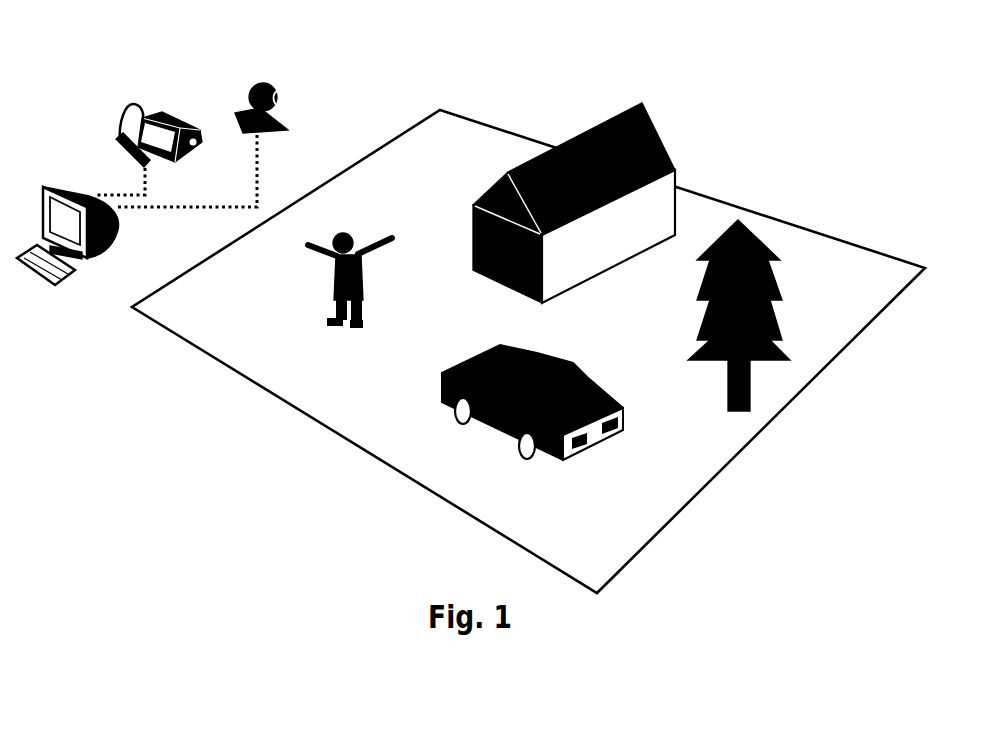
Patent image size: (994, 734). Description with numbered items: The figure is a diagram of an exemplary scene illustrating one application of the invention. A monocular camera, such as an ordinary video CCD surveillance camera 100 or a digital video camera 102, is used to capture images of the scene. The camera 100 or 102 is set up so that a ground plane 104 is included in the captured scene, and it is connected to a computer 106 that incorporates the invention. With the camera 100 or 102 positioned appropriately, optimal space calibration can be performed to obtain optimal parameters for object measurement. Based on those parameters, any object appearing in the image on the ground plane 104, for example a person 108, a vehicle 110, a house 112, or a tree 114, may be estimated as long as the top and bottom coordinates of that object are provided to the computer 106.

The video CCD surveillance camera 100 is at (165, 100).
The digital video camera 102 is at (290, 92).
The ground plane 104 is at (249, 380).
The computer 106 is at (88, 268).
The person 108 is at (318, 300).
The vehicle 110 is at (430, 395).
The house 112 is at (595, 121).
The tree 114 is at (755, 227).